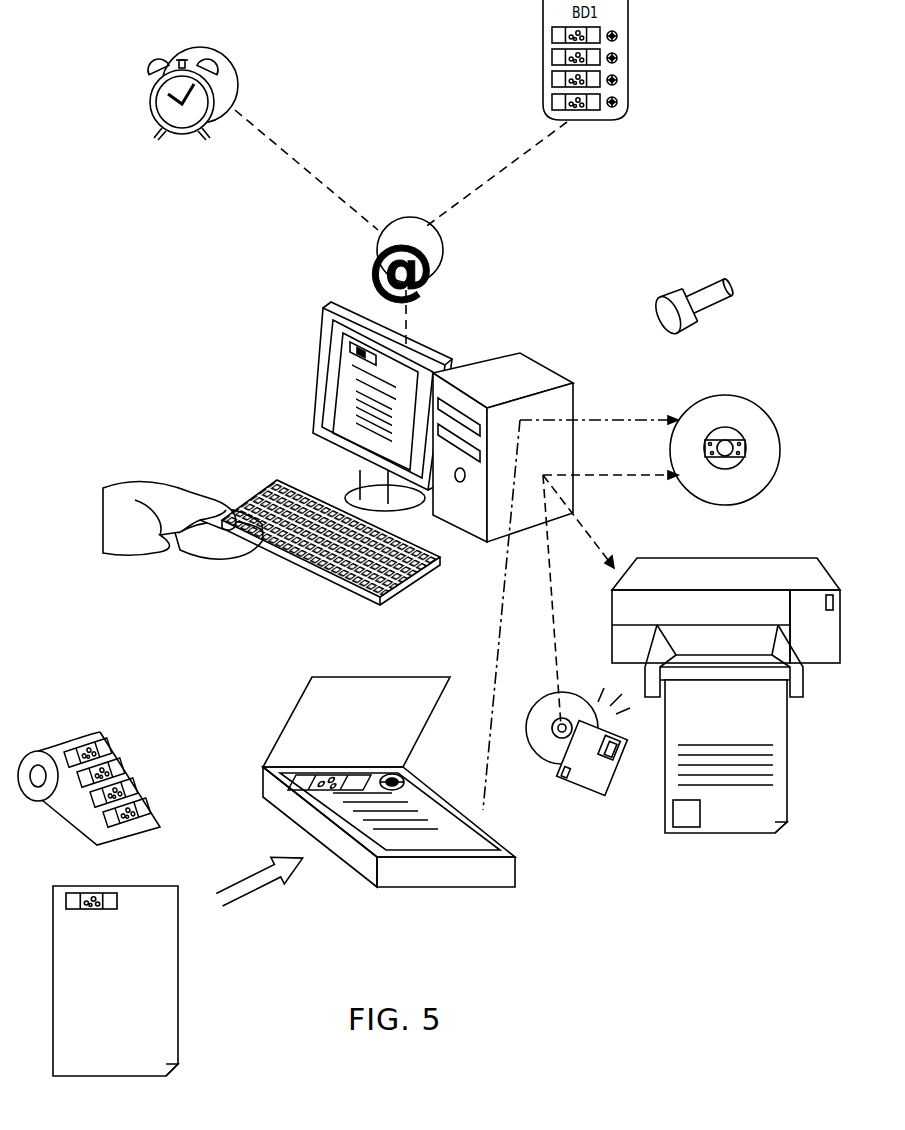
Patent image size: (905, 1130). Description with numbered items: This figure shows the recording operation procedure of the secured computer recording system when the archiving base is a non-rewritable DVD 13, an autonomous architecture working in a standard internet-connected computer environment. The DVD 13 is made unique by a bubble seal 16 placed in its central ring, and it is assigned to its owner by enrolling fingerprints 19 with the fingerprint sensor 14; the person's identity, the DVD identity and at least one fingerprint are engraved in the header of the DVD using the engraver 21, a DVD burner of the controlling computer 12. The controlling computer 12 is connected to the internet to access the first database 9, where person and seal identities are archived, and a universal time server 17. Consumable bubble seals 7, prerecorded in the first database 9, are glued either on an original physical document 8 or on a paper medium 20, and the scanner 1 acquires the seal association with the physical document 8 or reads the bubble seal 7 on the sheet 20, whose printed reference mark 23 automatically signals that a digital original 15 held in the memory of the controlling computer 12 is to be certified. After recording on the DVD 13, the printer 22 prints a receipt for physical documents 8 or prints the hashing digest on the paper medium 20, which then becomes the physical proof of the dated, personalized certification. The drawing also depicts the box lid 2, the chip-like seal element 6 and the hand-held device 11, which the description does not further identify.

The scanner 1 is at (262, 782).
The box lid 2 is at (443, 698).
The electronic tag / chip 6 is at (618, 80).
The bubble seal 7 is at (552, 35).
The original physical document 8 is at (440, 816).
The BD1 9 is at (562, 117).
The flashlight / reader 11 is at (684, 322).
The controlling computer 12 is at (572, 398).
The non-rewritable DVD 13 is at (752, 462).
The fingerprint sensor 14 is at (234, 560).
The original digital document 15 is at (594, 788).
The bubble seal 16 is at (746, 447).
The universal time server 17 is at (165, 60).
The fingerprints 19 is at (196, 504).
The paper medium 20 is at (786, 727).
The engraver 21 is at (466, 410).
The printer 22 is at (746, 568).
The printed reference mark 23 is at (684, 828).